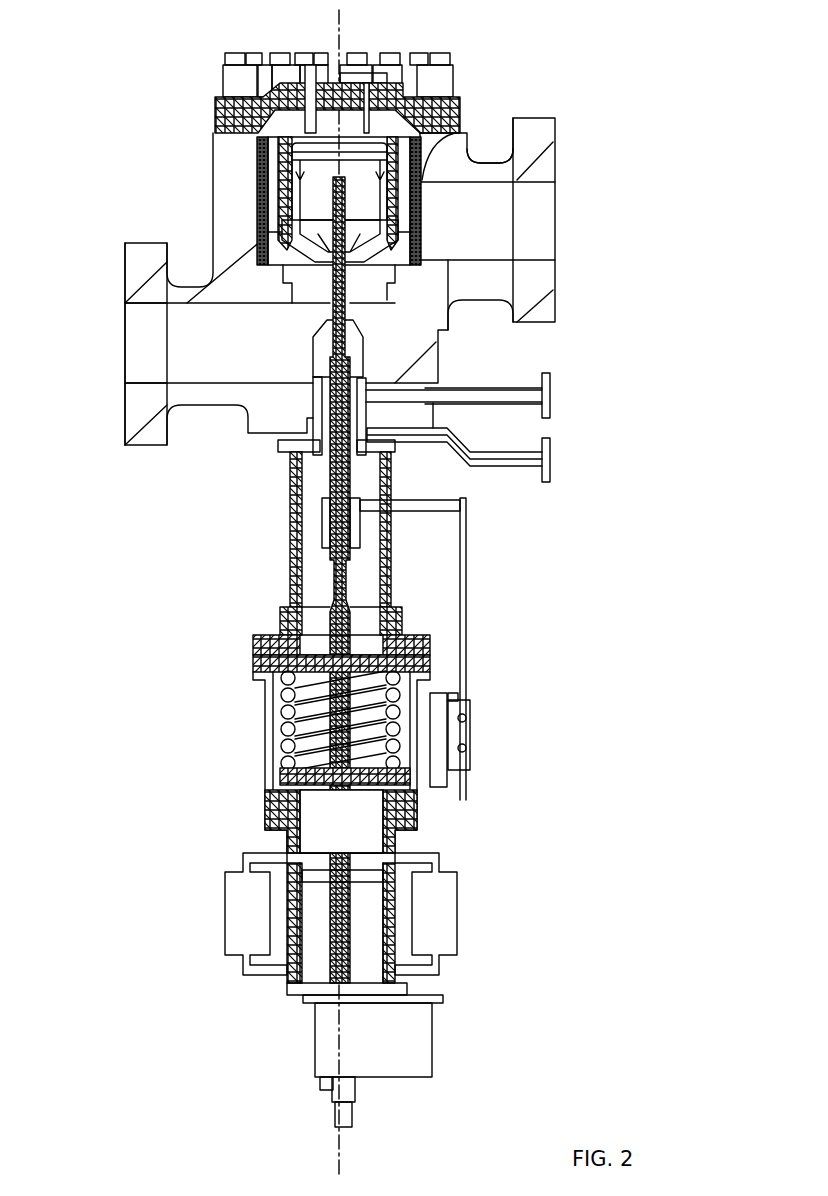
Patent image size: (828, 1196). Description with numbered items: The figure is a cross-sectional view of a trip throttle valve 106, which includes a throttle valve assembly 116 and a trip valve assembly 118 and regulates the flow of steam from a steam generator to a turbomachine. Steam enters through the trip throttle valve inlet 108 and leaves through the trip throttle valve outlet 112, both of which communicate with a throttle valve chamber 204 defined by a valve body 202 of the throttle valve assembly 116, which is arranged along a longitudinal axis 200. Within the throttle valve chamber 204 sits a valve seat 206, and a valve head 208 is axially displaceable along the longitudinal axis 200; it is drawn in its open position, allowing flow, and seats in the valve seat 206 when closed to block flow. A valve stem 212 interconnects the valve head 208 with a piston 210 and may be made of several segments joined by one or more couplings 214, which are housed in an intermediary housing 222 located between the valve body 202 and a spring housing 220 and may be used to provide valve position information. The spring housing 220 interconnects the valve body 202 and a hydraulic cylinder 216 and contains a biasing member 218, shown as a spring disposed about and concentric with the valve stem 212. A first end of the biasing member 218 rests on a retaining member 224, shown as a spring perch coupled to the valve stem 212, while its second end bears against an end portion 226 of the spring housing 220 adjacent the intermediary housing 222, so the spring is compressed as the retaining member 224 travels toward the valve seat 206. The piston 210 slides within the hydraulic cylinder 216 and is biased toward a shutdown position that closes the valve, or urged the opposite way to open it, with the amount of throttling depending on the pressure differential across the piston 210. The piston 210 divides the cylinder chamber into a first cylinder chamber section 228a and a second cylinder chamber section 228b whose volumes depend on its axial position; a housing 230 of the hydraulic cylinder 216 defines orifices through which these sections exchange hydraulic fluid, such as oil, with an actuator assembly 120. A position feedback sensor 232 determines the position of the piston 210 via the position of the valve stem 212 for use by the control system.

The longitudinal axis 200 is at (336, 38).
The trip throttle valve 106 is at (150, 68).
The trip throttle valve inlet 108 is at (535, 116).
The trip throttle valve outlet 112 is at (148, 243).
The throttle valve assembly 116 is at (478, 152).
The trip valve assembly 118 is at (264, 925).
The actuator assembly 120 is at (453, 925).
The valve body 202 is at (215, 182).
The throttle valve chamber 204 is at (372, 255).
The valve seat 206 is at (378, 262).
The valve head 208 is at (370, 254).
The piston 210 is at (370, 875).
The valve stem 212 is at (327, 612).
The coupling 214 is at (354, 527).
The hydraulic cylinder 216 is at (282, 937).
The biasing member 218 is at (449, 697).
The spring housing 220 is at (265, 737).
The intermediary housing 222 is at (290, 523).
The retaining member 224 is at (283, 757).
The end portion 226 is at (438, 666).
The first cylinder chamber section 228a is at (317, 970).
The second cylinder chamber section 228b is at (370, 853).
The housing 230 is at (392, 947).
The position feedback sensor 232 is at (432, 1040).